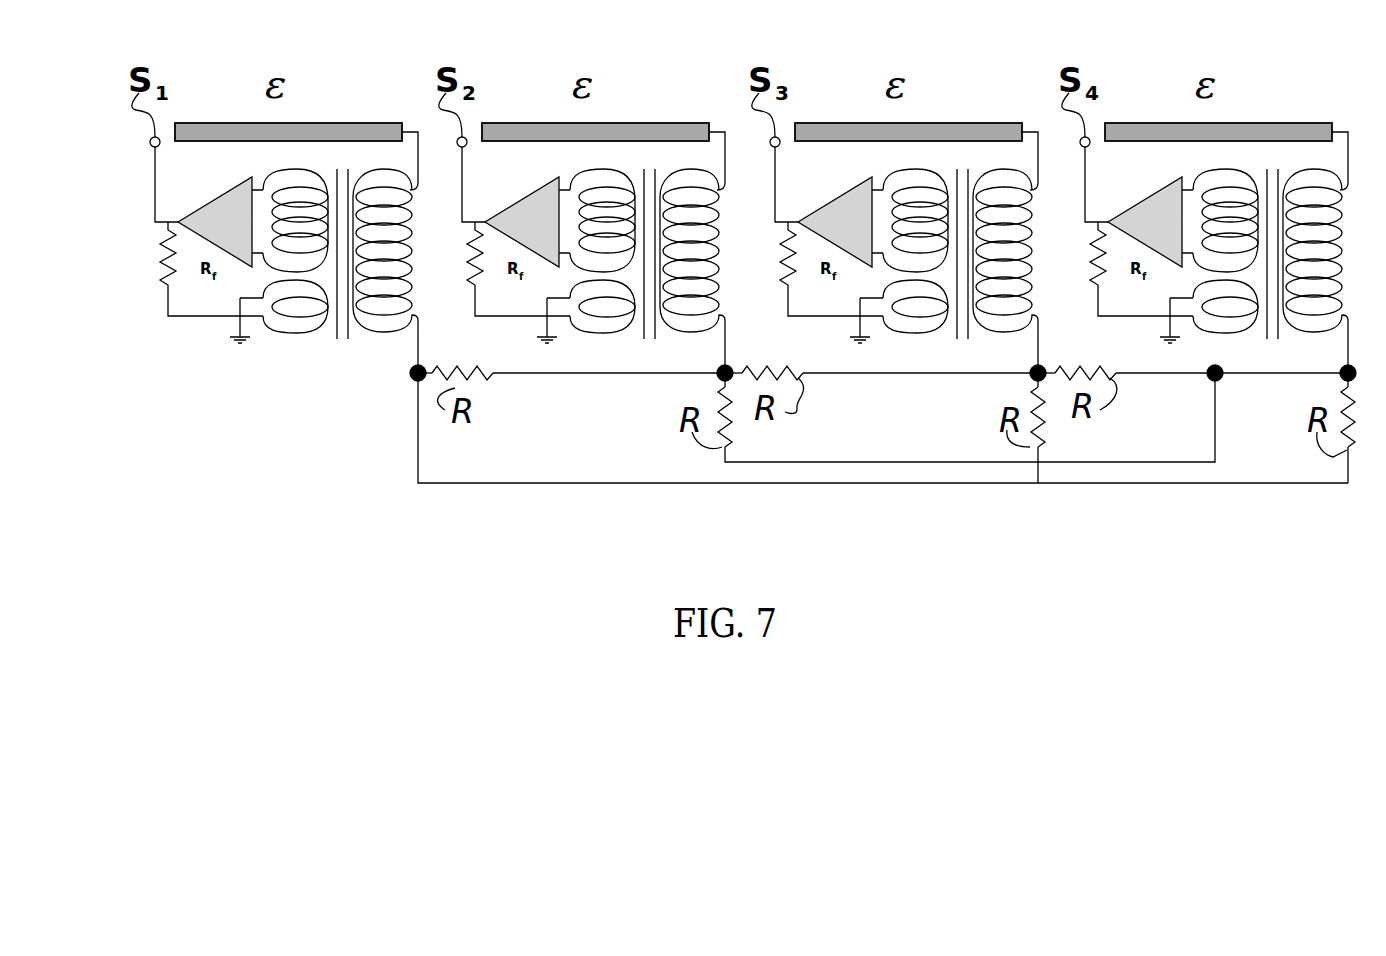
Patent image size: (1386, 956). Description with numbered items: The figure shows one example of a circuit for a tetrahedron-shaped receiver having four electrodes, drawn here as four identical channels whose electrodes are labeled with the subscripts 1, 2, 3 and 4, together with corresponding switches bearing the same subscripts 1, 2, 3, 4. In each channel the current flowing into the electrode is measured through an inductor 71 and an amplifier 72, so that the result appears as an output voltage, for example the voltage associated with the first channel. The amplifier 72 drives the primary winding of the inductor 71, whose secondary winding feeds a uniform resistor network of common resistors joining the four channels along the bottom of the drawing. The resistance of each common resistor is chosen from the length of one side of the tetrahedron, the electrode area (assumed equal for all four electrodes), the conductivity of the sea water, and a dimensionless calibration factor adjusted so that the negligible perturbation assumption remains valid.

The inductor 71 is at (333, 339).
The amplifier 72 is at (237, 240).
The electrode E1 1 is at (265, 132).
The electrode E2 2 is at (603, 125).
The electrode E3 3 is at (916, 125).
The electrode E4 4 is at (1226, 125).